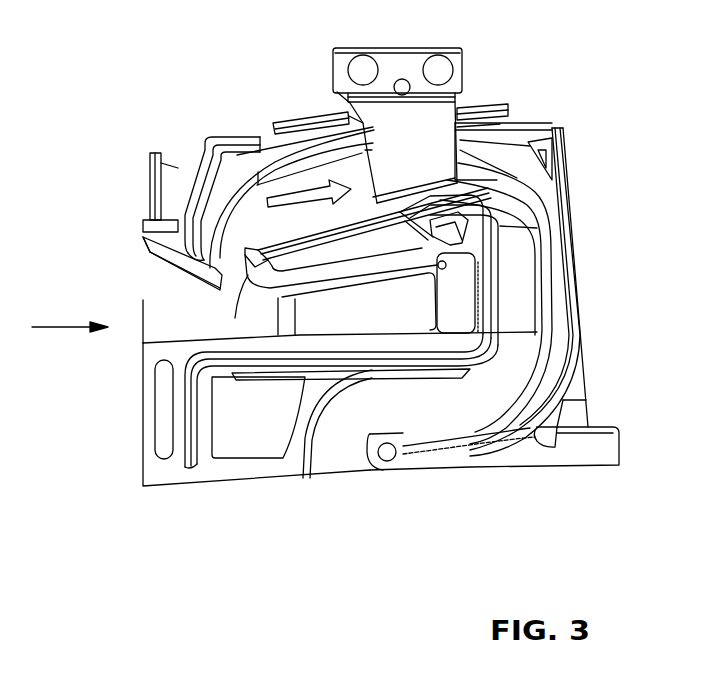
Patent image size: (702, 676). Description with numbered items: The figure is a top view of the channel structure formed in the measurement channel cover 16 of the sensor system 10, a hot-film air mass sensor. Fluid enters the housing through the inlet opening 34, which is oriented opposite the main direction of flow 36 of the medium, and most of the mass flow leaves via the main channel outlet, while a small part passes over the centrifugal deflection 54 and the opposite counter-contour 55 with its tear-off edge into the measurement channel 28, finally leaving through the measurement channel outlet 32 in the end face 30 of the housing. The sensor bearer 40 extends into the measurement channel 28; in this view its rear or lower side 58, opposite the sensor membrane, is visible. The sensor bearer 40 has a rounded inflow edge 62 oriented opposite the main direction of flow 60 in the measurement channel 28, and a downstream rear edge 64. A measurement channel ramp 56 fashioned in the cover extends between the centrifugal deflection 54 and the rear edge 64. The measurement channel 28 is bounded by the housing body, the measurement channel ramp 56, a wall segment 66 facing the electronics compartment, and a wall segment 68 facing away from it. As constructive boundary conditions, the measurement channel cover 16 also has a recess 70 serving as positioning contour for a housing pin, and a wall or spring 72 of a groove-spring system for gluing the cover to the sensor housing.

The sensor system 10 is at (596, 124).
The measurement channel cover 16 is at (577, 272).
The measurement channel 28 is at (493, 173).
The end face 30 is at (422, 473).
The measurement channel outlet 32 is at (338, 467).
The inlet opening 34 is at (157, 298).
The main direction of flow 36 is at (58, 327).
The sensor bearer 40 is at (461, 66).
The centrifugal deflection 54 is at (182, 258).
The counter-contour 55 is at (250, 300).
The measurement channel ramp 56 is at (326, 160).
The lower side 58 is at (440, 119).
The main direction of flow 60 is at (270, 214).
The inflow edge 62 is at (358, 165).
The rear edge 64 is at (550, 187).
The wall segment 66 is at (340, 170).
The wall segment 68 is at (483, 210).
The recess 70 is at (447, 240).
The spring 72 is at (312, 357).